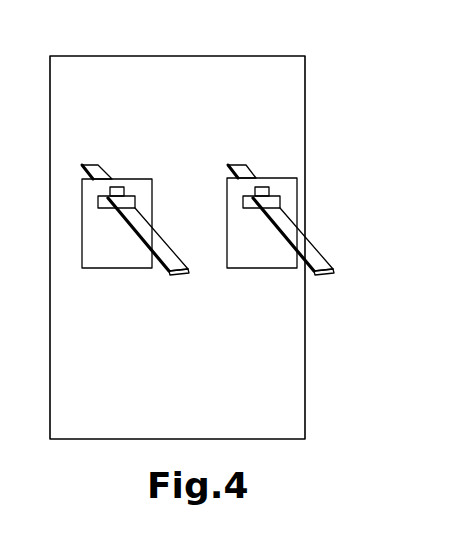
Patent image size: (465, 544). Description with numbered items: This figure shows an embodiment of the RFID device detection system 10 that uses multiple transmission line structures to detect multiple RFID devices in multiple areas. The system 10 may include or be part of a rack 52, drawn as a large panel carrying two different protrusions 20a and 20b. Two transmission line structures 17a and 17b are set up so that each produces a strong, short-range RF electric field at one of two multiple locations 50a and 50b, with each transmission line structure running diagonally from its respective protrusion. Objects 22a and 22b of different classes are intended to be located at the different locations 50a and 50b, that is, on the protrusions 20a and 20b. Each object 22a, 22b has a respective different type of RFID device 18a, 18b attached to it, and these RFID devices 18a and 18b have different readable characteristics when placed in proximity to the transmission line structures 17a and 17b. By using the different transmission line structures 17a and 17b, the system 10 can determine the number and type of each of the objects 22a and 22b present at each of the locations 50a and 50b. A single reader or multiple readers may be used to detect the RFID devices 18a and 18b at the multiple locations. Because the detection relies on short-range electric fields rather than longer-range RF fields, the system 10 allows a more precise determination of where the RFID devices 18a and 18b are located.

The RFID device detection system 10 is at (23, 62).
The rack 52 is at (132, 56).
The location 50a is at (60, 217).
The location 50b is at (348, 239).
The object 22a is at (141, 186).
The object 22b is at (283, 184).
The transmission line structure 17a is at (172, 233).
The transmission line structure 17b is at (320, 241).
The RFID device 18a is at (117, 187).
The RFID device 18b is at (261, 187).
The protrusion 20a is at (179, 276).
The protrusion 20b is at (322, 277).